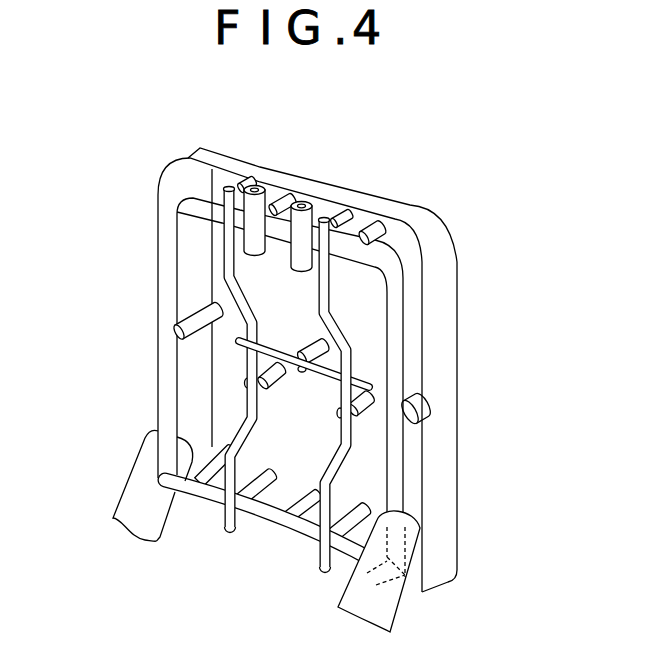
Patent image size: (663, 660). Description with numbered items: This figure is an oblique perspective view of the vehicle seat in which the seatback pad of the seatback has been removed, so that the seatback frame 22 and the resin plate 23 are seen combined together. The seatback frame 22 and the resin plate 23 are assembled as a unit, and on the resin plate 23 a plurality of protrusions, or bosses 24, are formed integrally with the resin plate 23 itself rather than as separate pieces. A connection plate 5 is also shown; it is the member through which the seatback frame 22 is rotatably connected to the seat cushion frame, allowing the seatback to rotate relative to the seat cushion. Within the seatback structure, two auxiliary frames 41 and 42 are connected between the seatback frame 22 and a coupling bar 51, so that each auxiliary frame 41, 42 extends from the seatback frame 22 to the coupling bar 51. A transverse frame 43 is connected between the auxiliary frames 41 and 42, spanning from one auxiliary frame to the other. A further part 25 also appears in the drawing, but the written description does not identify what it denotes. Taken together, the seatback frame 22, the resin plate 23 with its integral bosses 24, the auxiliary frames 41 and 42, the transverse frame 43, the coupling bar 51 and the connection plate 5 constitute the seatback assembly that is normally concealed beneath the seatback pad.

The connection plate 5 is at (129, 494).
The seatback frame 22 is at (166, 375).
The resin plate 23 is at (444, 427).
The protrusion (boss) 24 is at (384, 235).
The boss 25 is at (306, 202).
The auxiliary frame 41 is at (226, 272).
The auxiliary frame 42 is at (340, 327).
The transverse frame 43 is at (320, 368).
The coupling bar 51 is at (273, 533).